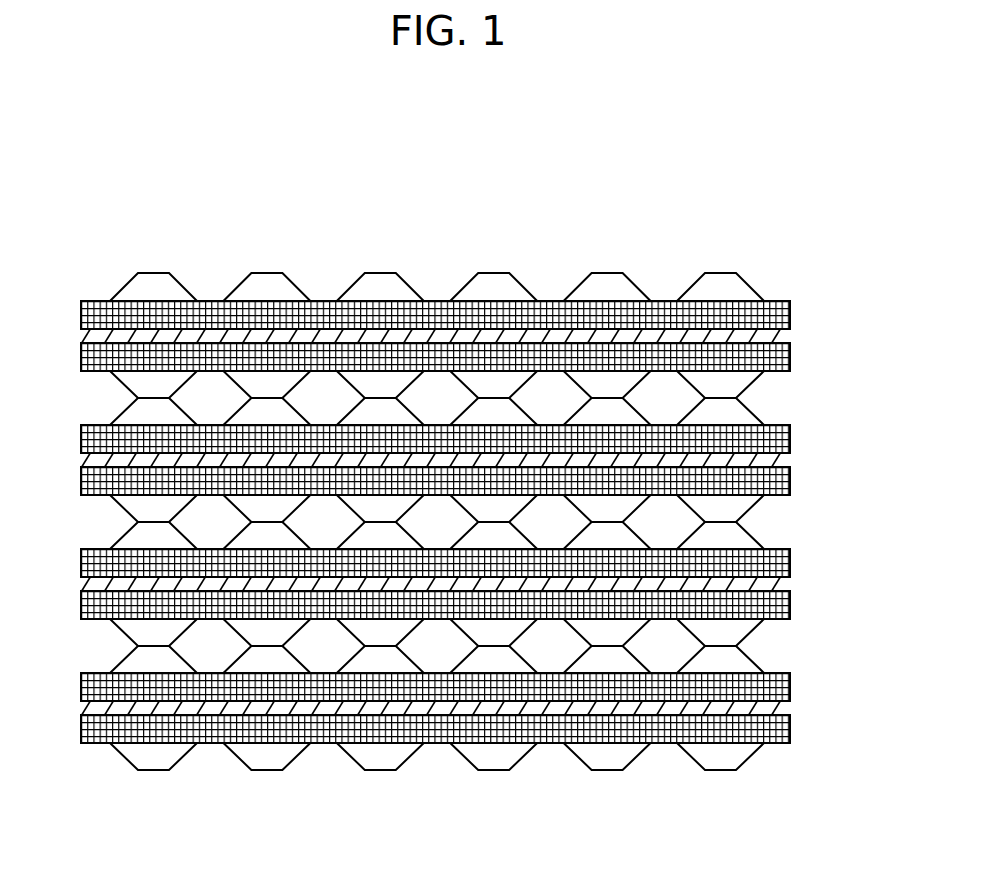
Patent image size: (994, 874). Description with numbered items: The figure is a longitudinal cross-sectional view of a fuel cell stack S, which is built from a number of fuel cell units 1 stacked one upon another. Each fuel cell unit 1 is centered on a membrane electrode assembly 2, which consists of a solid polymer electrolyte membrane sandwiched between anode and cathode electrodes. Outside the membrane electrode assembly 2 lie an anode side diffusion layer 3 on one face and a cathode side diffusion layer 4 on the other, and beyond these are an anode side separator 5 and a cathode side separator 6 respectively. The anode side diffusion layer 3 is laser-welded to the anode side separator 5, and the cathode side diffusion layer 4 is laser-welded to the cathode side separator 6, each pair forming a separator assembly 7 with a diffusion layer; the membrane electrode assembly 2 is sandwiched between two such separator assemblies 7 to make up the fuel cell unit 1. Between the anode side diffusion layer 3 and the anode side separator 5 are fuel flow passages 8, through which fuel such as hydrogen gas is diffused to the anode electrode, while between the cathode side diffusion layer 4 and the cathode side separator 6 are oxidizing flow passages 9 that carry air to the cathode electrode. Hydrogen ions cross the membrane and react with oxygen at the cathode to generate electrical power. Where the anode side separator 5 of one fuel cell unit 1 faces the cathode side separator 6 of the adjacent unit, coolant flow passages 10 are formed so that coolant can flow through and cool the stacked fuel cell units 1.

The fuel cell stack S is at (436, 238).
The fuel cell unit 1 is at (68, 277).
The membrane electrode assembly 2 is at (790, 708).
The anode side diffusion layer 3 is at (790, 685).
The cathode side diffusion layer 4 is at (790, 730).
The anode side separator 5 is at (733, 660).
The cathode side separator 6 is at (757, 627).
The separator assembly with a diffusion layer 7 is at (864, 618).
The fuel flow passages 8 is at (737, 648).
The oxidizing flow passages 9 is at (725, 762).
The coolant flow passages 10 is at (715, 690).